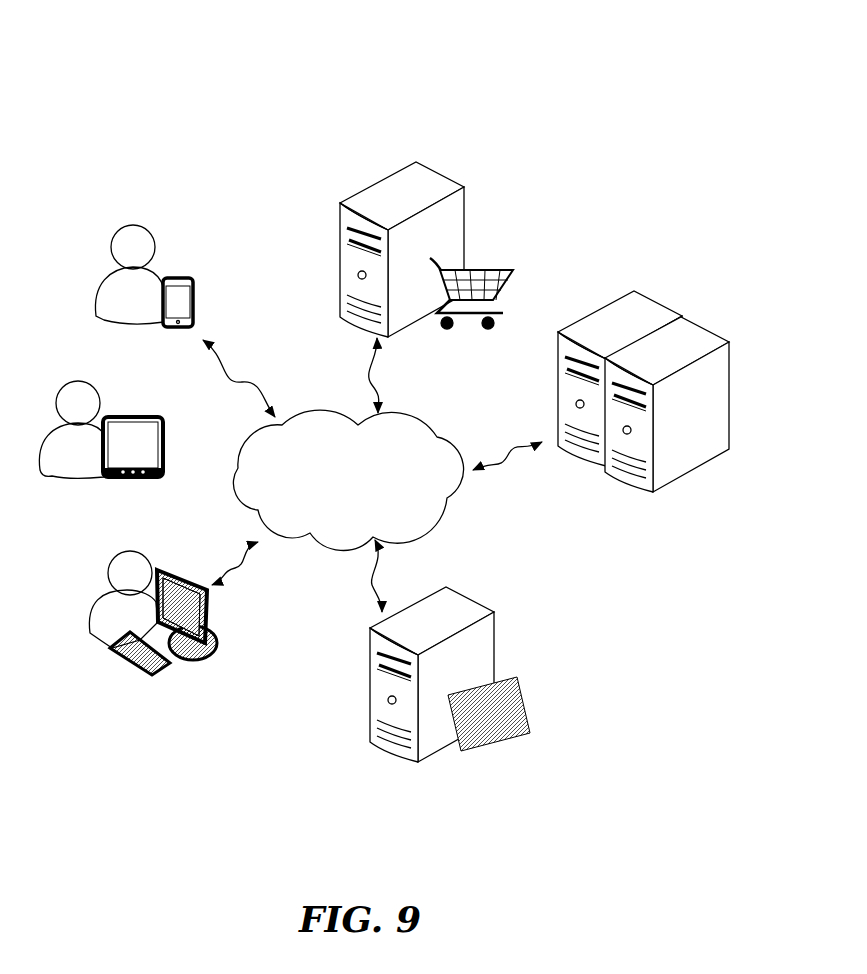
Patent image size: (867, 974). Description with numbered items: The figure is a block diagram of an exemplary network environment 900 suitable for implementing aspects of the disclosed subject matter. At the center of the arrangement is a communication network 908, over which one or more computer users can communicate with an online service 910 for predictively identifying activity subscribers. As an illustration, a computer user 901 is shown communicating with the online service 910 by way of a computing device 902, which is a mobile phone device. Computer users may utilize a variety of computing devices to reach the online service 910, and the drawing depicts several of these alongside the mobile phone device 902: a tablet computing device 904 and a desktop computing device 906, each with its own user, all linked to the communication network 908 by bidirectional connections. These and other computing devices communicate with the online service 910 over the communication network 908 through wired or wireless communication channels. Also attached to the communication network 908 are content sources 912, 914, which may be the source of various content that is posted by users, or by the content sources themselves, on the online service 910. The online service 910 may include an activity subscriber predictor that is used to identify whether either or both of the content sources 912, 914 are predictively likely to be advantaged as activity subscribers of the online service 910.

The network environment 900 is at (604, 104).
The computer user 901 is at (116, 224).
The computing device 902 is at (178, 268).
The tablet computing device 904 is at (122, 417).
The desktop computing device 906 is at (175, 575).
The communication network 908 is at (348, 480).
The online service 910 is at (700, 320).
The content source 912 is at (433, 162).
The content source 914 is at (415, 762).